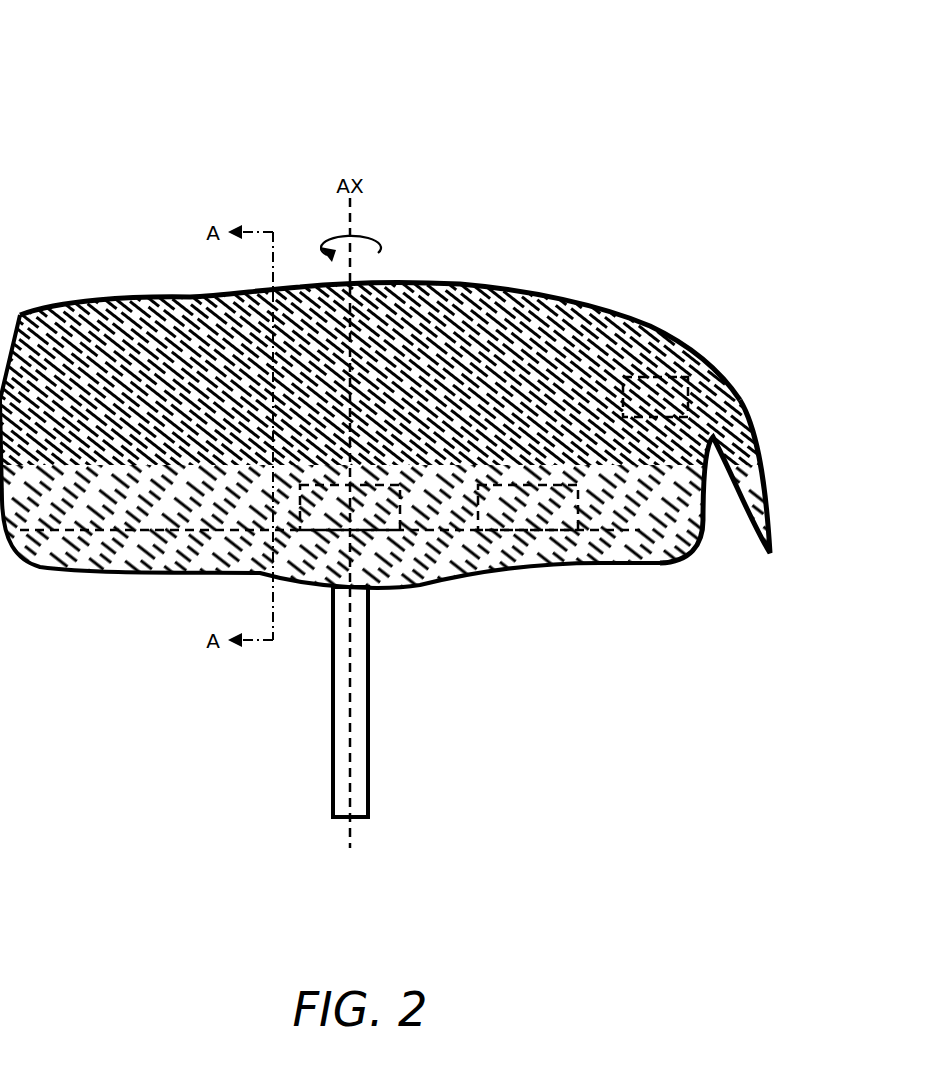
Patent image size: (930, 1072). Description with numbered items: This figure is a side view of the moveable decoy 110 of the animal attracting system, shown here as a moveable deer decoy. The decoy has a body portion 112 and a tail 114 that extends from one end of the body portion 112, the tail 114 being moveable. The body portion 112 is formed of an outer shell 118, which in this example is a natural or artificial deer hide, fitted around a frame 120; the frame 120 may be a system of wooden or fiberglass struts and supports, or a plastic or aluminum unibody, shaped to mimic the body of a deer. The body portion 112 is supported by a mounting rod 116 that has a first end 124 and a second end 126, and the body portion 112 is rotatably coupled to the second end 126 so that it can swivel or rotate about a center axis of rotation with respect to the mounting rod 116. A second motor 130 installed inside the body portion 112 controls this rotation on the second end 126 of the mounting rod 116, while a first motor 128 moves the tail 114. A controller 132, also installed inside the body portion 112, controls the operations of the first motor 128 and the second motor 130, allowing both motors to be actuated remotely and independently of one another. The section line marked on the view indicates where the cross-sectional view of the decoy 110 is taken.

The moveable decoy 110 is at (158, 73).
The body portion 112 is at (405, 425).
The tail 114 is at (760, 480).
The mounting rod 116 is at (368, 707).
The outer shell 118 is at (100, 293).
The frame 120 is at (620, 530).
The first end 124 is at (334, 805).
The second end 126 is at (300, 578).
The first motor 128 is at (655, 397).
The second motor 130 is at (350, 507).
The controller 132 is at (528, 507).